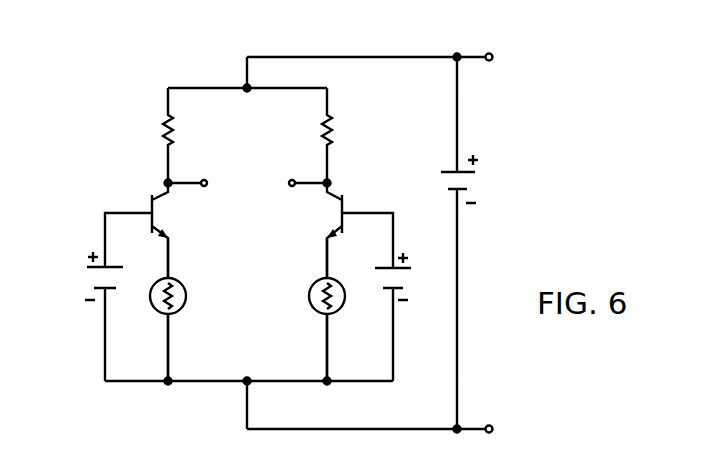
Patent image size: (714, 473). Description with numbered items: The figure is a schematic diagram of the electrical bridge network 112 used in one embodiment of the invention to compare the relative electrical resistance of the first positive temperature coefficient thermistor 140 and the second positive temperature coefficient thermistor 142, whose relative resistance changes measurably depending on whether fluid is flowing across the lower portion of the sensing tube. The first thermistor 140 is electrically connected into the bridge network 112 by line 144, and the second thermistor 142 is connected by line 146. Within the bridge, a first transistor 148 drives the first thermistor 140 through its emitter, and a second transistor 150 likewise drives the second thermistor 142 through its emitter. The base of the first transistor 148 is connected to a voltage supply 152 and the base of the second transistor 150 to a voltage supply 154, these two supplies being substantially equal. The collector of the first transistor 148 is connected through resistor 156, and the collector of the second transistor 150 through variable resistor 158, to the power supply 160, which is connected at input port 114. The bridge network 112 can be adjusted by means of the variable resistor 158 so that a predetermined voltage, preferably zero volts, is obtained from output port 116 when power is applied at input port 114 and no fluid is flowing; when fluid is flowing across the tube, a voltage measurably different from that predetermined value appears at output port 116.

The electrical bridge network 112 is at (374, 55).
The input port 114 is at (494, 60).
The output port 116 is at (262, 150).
The first positive temperature coefficient thermistor 140 is at (157, 312).
The second positive temperature coefficient thermistor 142 is at (311, 311).
The line 144 is at (173, 263).
The line 146 is at (324, 263).
The first transistor 148 is at (156, 213).
The second transistor 150 is at (338, 213).
The voltage supply 152 is at (90, 281).
The voltage supply 154 is at (407, 285).
The resistor 156 is at (160, 136).
The variable resistor 158 is at (331, 130).
The power supply 160 is at (474, 180).